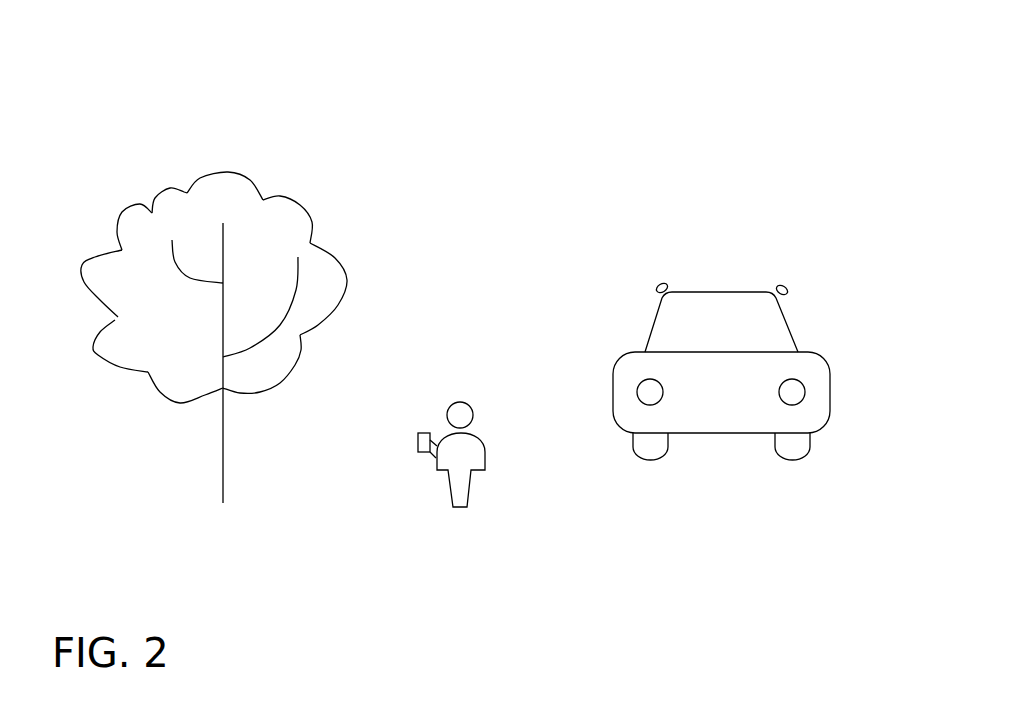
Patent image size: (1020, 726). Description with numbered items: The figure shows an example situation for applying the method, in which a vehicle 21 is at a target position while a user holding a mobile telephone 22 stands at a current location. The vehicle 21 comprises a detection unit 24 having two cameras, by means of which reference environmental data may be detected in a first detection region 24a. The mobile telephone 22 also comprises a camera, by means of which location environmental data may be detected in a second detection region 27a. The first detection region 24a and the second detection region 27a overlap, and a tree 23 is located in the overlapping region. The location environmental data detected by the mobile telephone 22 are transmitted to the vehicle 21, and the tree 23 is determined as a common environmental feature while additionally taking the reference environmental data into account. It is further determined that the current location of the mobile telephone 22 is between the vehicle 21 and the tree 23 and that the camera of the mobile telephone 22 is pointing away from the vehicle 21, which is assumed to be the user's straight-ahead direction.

The vehicle 21 is at (722, 264).
The mobile telephone 22 is at (416, 470).
The tree 23 is at (264, 172).
The detection unit 24 is at (651, 262).
The first detection region 24a is at (492, 219).
The second detection region 27a is at (272, 510).